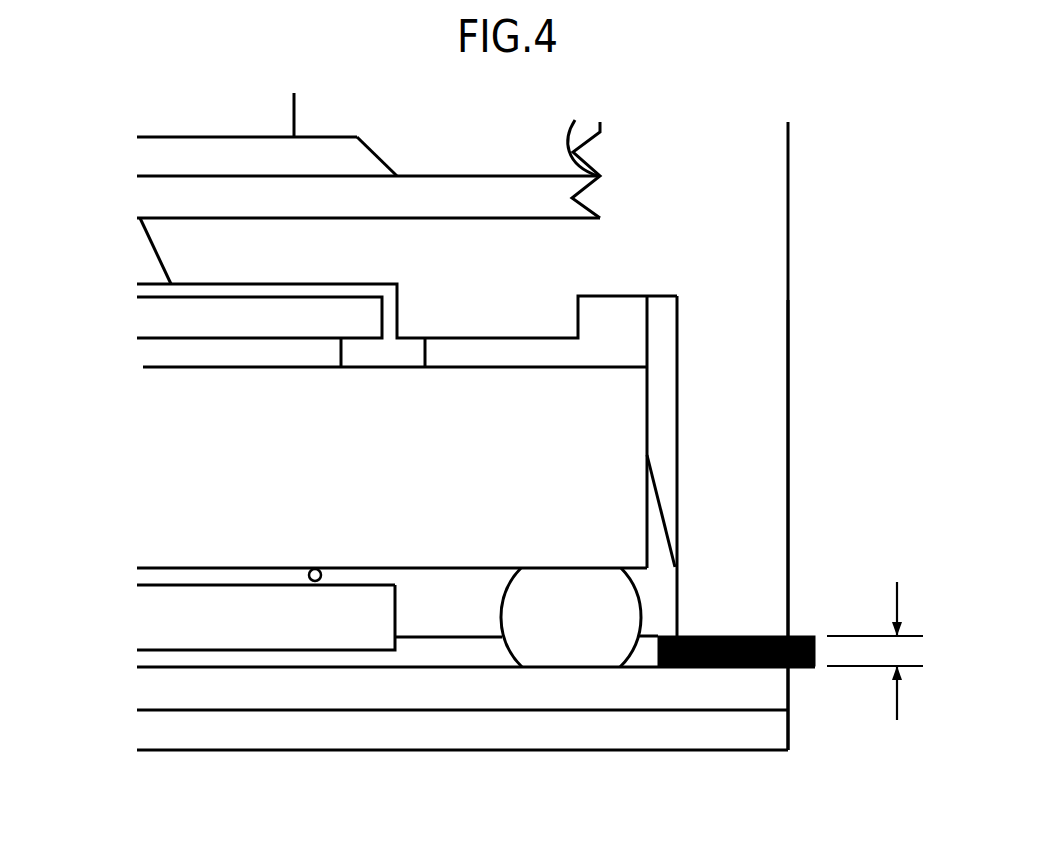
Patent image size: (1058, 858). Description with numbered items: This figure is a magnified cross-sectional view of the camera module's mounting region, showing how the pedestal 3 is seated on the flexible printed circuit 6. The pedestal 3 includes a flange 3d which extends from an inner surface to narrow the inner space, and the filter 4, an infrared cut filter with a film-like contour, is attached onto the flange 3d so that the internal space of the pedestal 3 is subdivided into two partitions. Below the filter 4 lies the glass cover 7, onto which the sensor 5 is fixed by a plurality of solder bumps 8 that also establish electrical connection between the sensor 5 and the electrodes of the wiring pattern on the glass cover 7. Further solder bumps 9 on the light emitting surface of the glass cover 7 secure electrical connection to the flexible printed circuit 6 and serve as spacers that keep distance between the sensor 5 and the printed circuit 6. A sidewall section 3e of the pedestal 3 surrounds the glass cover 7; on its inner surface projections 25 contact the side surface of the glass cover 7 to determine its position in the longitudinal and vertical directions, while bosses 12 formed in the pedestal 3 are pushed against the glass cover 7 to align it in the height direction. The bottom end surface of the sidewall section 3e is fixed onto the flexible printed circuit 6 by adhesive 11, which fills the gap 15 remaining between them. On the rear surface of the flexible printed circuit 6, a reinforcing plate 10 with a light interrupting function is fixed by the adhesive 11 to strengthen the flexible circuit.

The pedestal 3 is at (788, 178).
The flange 3d is at (188, 252).
The sidewall section 3e is at (758, 397).
The filter 4 is at (188, 323).
The sensor 5 is at (229, 637).
The flexible printed circuit 6 is at (202, 693).
The glass cover 7 is at (257, 552).
The solder bumps 8 is at (323, 583).
The solder bumps 9 is at (569, 627).
The reinforcing plate 10 is at (157, 735).
The adhesive 11 is at (798, 667).
The bosses 12 is at (382, 352).
The gap 15 is at (891, 651).
The projections 25 is at (662, 382).